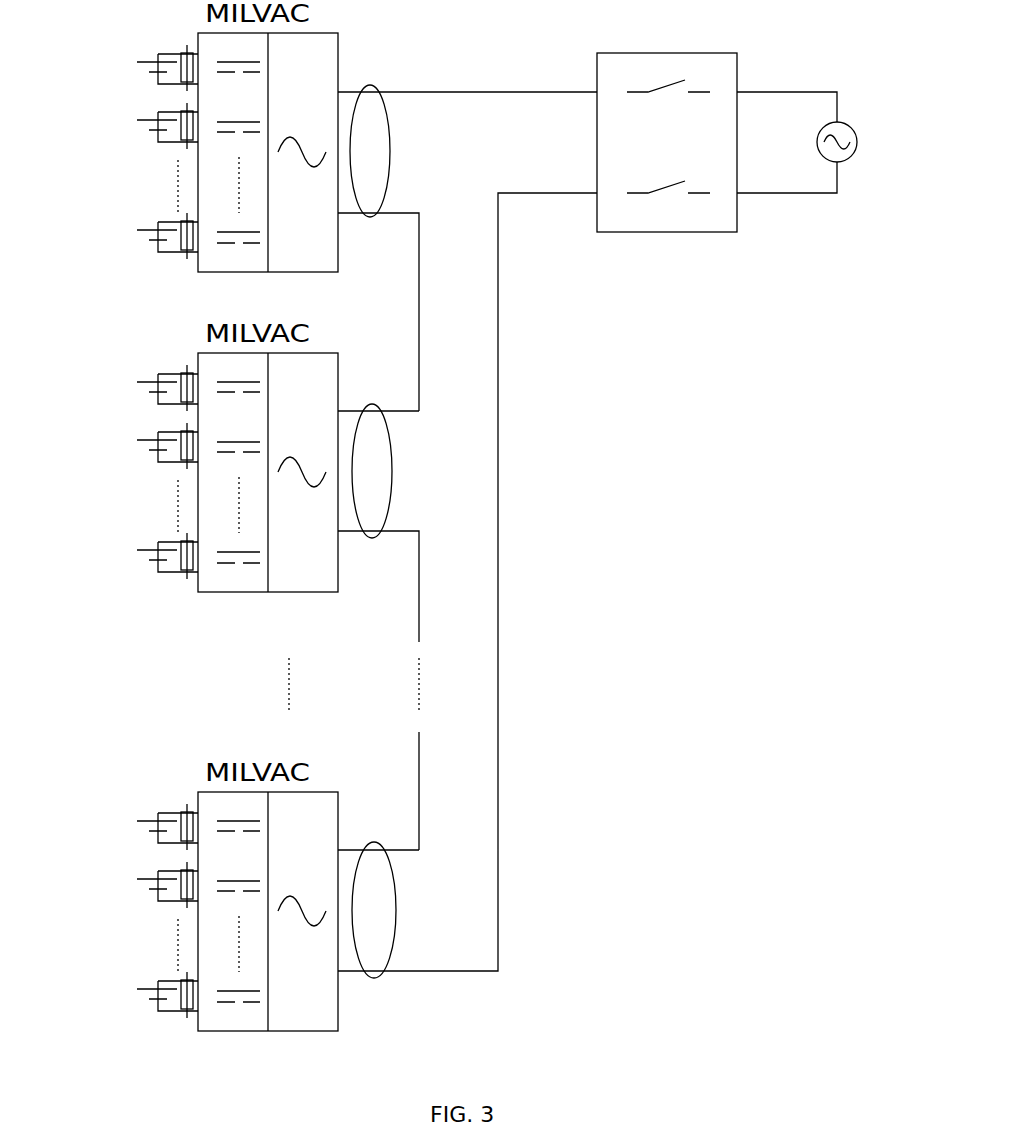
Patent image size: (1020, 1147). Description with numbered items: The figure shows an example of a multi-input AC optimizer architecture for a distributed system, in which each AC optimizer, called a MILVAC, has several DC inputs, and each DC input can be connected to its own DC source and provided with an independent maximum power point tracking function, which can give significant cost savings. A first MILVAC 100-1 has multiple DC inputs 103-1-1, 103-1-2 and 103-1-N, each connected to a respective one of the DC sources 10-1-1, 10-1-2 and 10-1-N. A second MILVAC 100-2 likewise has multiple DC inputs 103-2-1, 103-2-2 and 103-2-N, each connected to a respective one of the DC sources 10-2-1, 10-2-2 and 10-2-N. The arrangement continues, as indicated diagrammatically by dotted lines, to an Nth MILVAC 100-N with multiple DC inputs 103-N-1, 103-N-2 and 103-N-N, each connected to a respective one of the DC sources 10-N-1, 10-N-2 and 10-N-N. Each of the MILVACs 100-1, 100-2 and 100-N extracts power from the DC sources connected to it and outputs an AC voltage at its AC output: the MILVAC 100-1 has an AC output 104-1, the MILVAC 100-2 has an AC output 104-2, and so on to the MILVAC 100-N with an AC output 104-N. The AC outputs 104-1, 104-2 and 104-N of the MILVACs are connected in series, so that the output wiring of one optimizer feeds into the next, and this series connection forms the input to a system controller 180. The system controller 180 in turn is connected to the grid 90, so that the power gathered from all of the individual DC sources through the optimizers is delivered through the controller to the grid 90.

The DC source 10-1-1 is at (130, 63).
The DC source 10-1-2 is at (128, 128).
The DC source 10-1-N is at (127, 230).
The DC input 103-1-1 is at (188, 43).
The DC input 103-1-2 is at (187, 112).
The DC input 103-1-N is at (187, 254).
The MILVAC 100-1 is at (338, 245).
The AC output 104-1 is at (388, 80).
The DC source 10-2-1 is at (132, 383).
The DC source 10-2-2 is at (125, 447).
The DC source 10-2-N is at (133, 557).
The DC input 103-2-1 is at (187, 371).
The DC input 103-2-2 is at (187, 430).
The DC input 103-2-N is at (187, 574).
The MILVAC 100-2 is at (338, 563).
The AC output 104-2 is at (390, 395).
The DC source 10-N-1 is at (132, 823).
The DC source 10-N-2 is at (120, 887).
The DC source 10-N-N is at (133, 995).
The DC input 103-N-1 is at (188, 801).
The DC input 103-N-2 is at (187, 869).
The DC input 103-N-N is at (187, 1013).
The MILVAC 100-N is at (338, 1000).
The AC output 104-N is at (390, 835).
The system controller 180 is at (737, 212).
The grid 90 is at (852, 128).